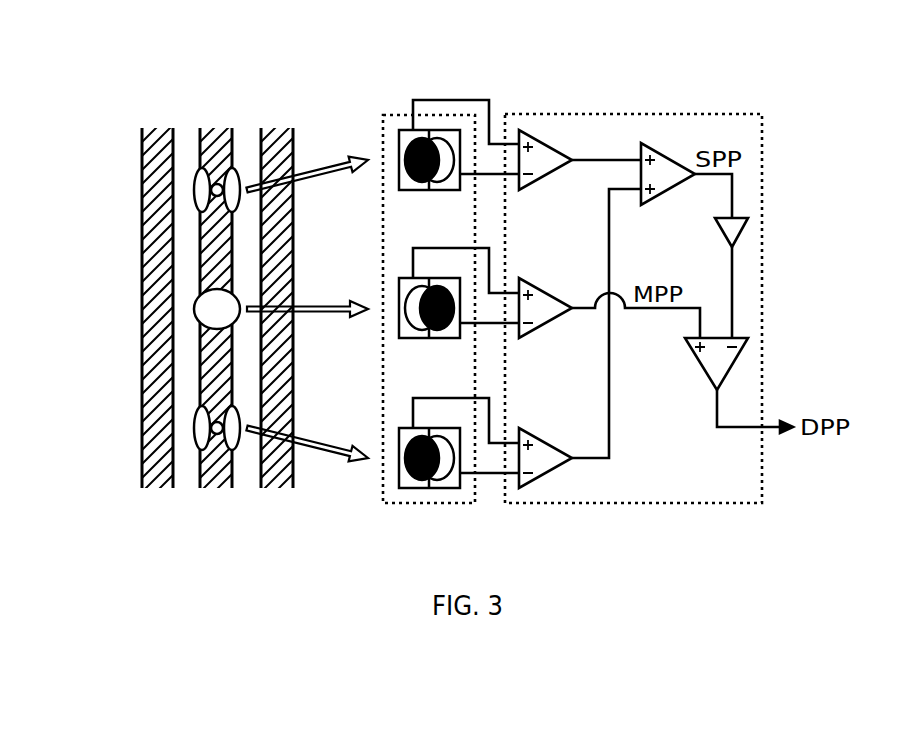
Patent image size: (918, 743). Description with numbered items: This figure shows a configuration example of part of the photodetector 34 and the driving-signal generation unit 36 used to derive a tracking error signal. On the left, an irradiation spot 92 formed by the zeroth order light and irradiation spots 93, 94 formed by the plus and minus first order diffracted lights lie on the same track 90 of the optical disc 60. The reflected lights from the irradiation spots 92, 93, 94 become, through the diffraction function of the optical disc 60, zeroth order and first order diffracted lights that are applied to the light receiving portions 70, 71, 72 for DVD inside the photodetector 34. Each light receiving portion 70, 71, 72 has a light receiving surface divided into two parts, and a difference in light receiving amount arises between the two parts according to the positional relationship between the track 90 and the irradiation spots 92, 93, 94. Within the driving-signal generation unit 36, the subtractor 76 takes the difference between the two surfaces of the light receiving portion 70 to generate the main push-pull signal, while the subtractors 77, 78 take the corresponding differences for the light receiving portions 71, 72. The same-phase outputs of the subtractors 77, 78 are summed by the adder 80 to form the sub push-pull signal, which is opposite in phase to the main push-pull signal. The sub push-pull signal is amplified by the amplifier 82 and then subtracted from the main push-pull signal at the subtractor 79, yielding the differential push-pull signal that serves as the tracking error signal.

The photodetector 34 is at (400, 503).
The driving-signal generation unit 36 is at (657, 503).
The optical disc 60 is at (217, 99).
The light receiving portion 70 is at (399, 278).
The light receiving portion 71 is at (399, 130).
The light receiving portion 72 is at (399, 428).
The subtractor 76 is at (533, 332).
The subtractor 77 is at (533, 183).
The subtractor 78 is at (533, 482).
The subtractor 79 is at (698, 368).
The adder 80 is at (650, 202).
The amplifier 82 is at (748, 223).
The track 90 is at (157, 488).
The irradiation spot 92 is at (185, 309).
The irradiation spot 93 is at (185, 190).
The irradiation spot 94 is at (185, 428).